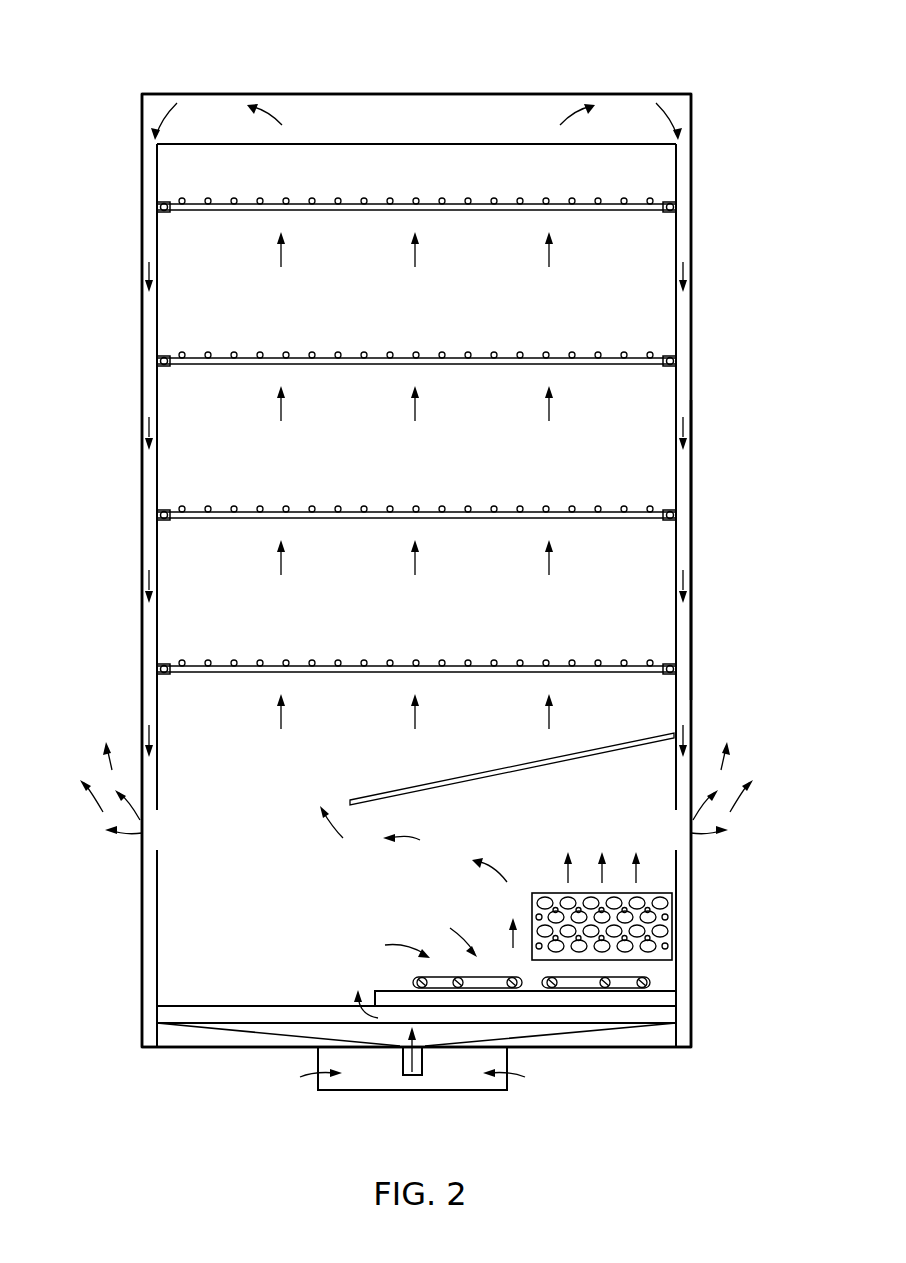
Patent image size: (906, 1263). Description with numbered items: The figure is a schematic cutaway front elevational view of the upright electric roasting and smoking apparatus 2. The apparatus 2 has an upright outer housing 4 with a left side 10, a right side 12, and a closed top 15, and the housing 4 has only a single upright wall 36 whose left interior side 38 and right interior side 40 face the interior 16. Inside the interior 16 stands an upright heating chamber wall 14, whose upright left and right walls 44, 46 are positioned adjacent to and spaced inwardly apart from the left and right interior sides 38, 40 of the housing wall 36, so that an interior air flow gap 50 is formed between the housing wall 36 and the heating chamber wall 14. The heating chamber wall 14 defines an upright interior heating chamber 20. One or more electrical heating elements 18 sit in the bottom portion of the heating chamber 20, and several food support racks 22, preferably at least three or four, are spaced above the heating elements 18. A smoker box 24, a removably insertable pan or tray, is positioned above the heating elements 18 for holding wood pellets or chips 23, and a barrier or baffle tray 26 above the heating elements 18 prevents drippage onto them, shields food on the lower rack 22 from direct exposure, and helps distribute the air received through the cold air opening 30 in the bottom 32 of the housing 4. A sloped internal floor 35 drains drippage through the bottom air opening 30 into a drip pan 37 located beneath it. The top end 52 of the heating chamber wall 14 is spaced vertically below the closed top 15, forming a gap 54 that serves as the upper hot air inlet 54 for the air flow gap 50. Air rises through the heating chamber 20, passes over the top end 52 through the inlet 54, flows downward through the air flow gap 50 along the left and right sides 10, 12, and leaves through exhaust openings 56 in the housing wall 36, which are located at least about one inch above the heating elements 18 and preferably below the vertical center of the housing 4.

The upright electric roasting and smoking apparatus 2 is at (505, 74).
The upright outer housing 4 is at (190, 94).
The left side 10 is at (142, 330).
The right side 12 is at (691, 330).
The upright heating chamber wall 14 is at (157, 470).
The closed top 15 is at (265, 94).
The interior 16 is at (690, 94).
The electrical heating elements 18 is at (413, 980).
The interior heating chamber 20 is at (430, 477).
The food support racks 22 is at (483, 211).
The wood pellets or chips 23 is at (556, 893).
The smoker box 24 is at (532, 906).
The barrier or baffle tray 26 is at (393, 791).
The cold air opening 30 is at (413, 1075).
The bottom 32 is at (221, 1047).
The sloped internal floor 35 is at (275, 1023).
The single upright wall 36 is at (691, 496).
The drip pan 37 is at (465, 1090).
The left interior side 38 is at (148, 622).
The right interior side 40 is at (684, 622).
The left wall 44 is at (157, 560).
The right wall 46 is at (676, 473).
The interior air flow gap 50 is at (150, 398).
The top end 52 is at (160, 134).
The gap / upper hot air inlet 54 is at (152, 150).
The exhaust openings 56 is at (145, 843).